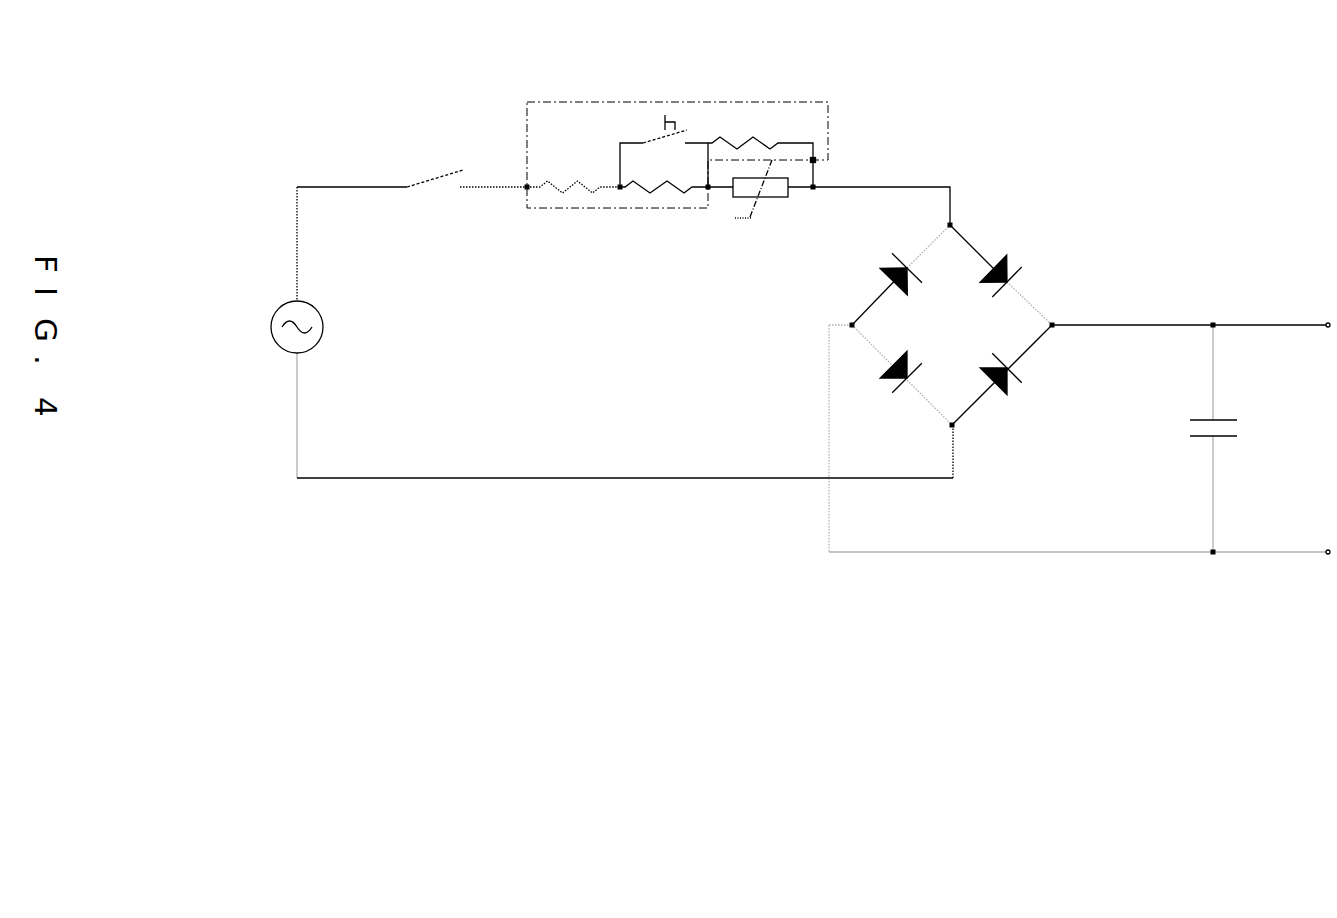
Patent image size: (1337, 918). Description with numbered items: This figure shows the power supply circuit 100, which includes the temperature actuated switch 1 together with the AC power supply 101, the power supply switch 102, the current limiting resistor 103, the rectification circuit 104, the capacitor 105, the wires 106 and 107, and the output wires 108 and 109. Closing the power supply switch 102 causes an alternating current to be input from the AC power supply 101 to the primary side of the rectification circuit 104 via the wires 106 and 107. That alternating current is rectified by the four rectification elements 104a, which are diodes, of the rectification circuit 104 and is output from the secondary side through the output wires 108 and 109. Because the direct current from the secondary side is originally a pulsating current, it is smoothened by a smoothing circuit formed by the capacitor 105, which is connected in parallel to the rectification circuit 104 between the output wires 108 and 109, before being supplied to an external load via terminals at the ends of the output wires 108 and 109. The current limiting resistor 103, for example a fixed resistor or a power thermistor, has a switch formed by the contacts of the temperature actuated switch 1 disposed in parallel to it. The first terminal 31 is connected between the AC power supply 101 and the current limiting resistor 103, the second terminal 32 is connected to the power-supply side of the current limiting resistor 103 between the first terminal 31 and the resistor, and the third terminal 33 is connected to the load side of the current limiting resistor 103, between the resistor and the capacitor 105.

The power supply circuit 100 is at (310, 143).
The AC power supply 101 is at (278, 307).
The power supply switch 102 is at (438, 177).
The temperature actuated switch 1 is at (814, 102).
The first terminal 31 is at (535, 185).
The second terminal 32 is at (703, 185).
The third terminal 33 is at (814, 160).
The current limiting resistor 103 is at (778, 183).
The rectification circuit 104 is at (990, 250).
The rectification elements 104a is at (1008, 263).
The capacitor 105 is at (1223, 418).
The wire 106 is at (930, 187).
The wire 107 is at (740, 478).
The output wire 108 is at (1168, 325).
The output wire 109 is at (1020, 552).